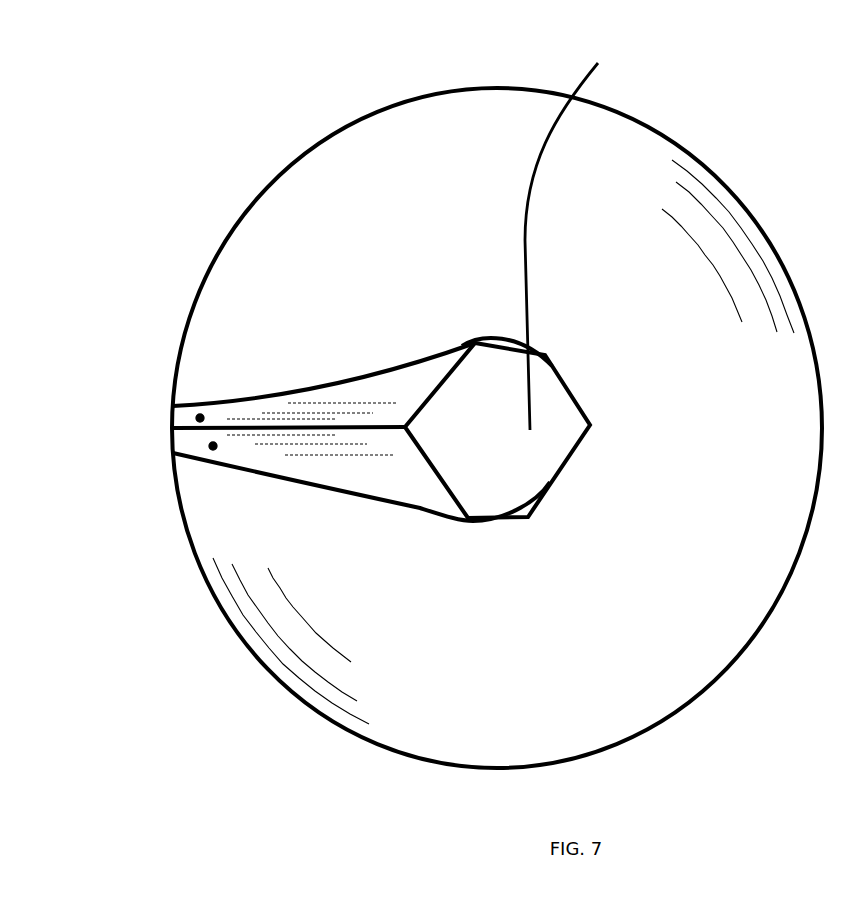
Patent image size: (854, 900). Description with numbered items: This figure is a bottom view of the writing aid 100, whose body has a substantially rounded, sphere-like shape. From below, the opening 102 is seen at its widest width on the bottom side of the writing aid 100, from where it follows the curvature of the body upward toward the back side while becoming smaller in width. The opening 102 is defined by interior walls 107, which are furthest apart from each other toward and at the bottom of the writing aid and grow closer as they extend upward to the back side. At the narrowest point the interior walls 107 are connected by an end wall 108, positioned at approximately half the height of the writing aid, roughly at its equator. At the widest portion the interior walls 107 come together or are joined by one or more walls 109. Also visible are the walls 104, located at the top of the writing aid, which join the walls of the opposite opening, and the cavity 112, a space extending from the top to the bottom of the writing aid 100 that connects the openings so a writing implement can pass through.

The writing aid 100 is at (182, 247).
The opening 102 is at (387, 507).
The walls 104 is at (443, 467).
The interior walls 107 is at (279, 393).
The end wall 108 is at (210, 446).
The walls 109 is at (573, 407).
The cavity 112 is at (572, 230).